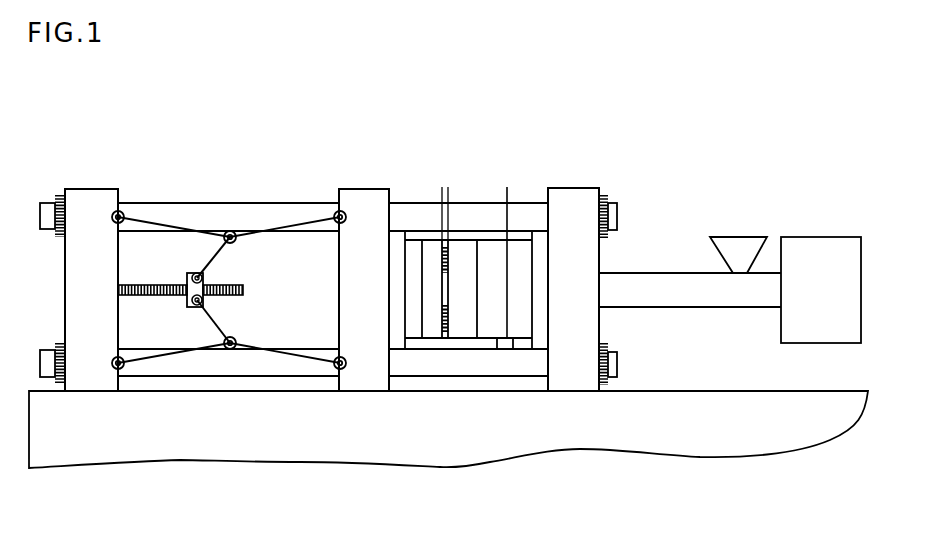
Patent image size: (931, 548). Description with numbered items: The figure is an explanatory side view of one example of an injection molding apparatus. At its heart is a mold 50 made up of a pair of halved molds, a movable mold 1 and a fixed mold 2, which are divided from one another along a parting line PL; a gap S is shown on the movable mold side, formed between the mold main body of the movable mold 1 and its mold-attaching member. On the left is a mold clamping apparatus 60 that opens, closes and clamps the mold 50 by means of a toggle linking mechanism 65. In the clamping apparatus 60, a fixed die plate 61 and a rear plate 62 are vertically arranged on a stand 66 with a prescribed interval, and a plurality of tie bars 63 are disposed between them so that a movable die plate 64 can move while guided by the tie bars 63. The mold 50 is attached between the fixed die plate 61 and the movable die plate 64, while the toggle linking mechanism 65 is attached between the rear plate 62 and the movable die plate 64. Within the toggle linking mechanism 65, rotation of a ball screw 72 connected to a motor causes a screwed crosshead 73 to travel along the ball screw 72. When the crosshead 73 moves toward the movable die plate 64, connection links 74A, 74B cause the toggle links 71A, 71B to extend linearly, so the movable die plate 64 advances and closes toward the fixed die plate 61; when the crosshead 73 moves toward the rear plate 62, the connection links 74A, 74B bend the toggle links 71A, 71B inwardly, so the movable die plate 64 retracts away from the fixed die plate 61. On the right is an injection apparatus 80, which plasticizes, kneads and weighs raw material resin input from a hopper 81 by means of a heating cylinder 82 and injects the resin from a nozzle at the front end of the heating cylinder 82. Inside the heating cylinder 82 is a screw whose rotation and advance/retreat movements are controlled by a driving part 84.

The mold clamping apparatus 60 is at (221, 152).
The rear plate 62 is at (93, 200).
The tie bars 63 is at (272, 210).
The movable die plate 64 is at (365, 198).
The fixed die plate 61 is at (575, 198).
The toggle linking mechanism 65 is at (302, 232).
The stand 66 is at (181, 430).
The toggle link 71A is at (236, 238).
The connection link 74A is at (218, 255).
The ball screw 72 is at (222, 284).
The crosshead 73 is at (215, 297).
The connection link 74B is at (218, 326).
The toggle link 71B is at (236, 343).
The mold 50 is at (475, 126).
The movable mold 1 is at (493, 252).
The fixed mold 2 is at (520, 252).
The parting line PL is at (508, 252).
The gap S is at (462, 193).
The injection apparatus 80 is at (782, 158).
The hopper 81 is at (740, 250).
The heating cylinder 82 is at (680, 285).
The driving part 84 is at (822, 248).